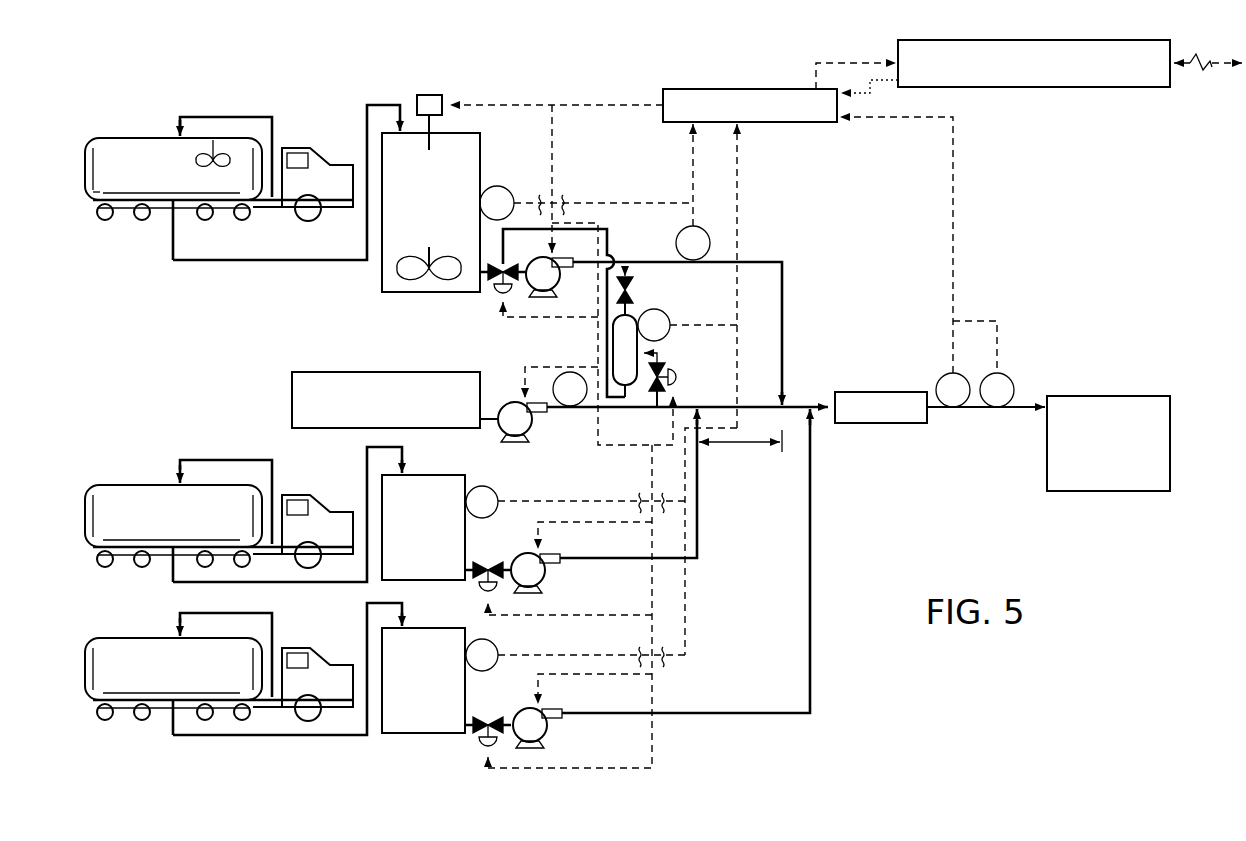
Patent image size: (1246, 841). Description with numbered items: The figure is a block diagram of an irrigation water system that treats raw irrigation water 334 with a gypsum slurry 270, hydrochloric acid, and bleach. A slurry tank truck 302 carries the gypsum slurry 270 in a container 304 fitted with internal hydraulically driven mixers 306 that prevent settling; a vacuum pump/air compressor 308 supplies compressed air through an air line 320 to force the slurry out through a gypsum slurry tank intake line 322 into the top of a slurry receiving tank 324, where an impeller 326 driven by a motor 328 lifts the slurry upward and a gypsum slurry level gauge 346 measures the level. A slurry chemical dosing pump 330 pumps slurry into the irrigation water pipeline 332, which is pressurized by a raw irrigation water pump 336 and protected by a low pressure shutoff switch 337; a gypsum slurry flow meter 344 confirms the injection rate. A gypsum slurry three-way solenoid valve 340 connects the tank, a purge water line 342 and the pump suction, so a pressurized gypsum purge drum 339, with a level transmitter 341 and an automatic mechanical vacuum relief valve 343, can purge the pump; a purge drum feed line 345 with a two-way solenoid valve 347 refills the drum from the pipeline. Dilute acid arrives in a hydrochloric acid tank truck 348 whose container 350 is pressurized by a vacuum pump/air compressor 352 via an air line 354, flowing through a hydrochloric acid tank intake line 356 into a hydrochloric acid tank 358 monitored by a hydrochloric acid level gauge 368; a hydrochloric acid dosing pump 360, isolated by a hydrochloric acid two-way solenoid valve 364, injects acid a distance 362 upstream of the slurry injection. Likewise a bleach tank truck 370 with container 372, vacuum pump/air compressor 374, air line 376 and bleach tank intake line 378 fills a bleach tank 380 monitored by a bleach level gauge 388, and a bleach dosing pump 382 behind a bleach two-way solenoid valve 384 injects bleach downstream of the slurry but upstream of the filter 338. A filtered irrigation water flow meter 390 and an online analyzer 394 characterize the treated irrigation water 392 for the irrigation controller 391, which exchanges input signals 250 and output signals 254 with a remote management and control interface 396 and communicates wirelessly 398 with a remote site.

The input signals 250 is at (640, 203).
The output signals 254 is at (604, 105).
The gypsum slurry 270 is at (98, 185).
The slurry tank truck 302 is at (160, 122).
The container 304 is at (105, 138).
The internal hydraulically driven mixers 306 is at (215, 158).
The vacuum pump/air compressor 308 is at (267, 208).
The air line 320 is at (243, 115).
The gypsum slurry tank intake line 322 is at (333, 261).
The slurry receiving tank 324 is at (428, 293).
The impeller 326 is at (407, 283).
The motor 328 is at (430, 95).
The slurry chemical dosing pump 330 is at (542, 294).
The irrigation water pipeline 332 is at (757, 406).
The raw irrigation water 334 is at (290, 396).
The raw irrigation water pump 336 is at (518, 443).
The low pressure shutoff switch 337 is at (553, 383).
The filter 338 is at (852, 391).
The pressurized gypsum purge drum 339 is at (615, 350).
The gypsum slurry three-way solenoid valve 340 is at (495, 286).
The level transmitter 341 is at (670, 320).
The purge water line 342 is at (610, 230).
The automatic mechanical vacuum relief valve 343 is at (636, 292).
The gypsum slurry flow meter 344 is at (700, 229).
The purge drum feed line 345 is at (655, 402).
The gypsum slurry level gauge 346 is at (506, 187).
The two-way solenoid valve 347 is at (667, 368).
The hydrochloric acid tank truck 348 is at (162, 470).
The container 350 is at (108, 485).
The vacuum pump/air compressor 352 is at (265, 560).
The air line 354 is at (248, 460).
The hydrochloric acid tank intake line 356 is at (275, 585).
The hydrochloric acid tank 358 is at (408, 582).
The hydrochloric acid dosing pump 360 is at (540, 590).
The distance 362 is at (745, 445).
The hydrochloric acid two-way solenoid valve 364 is at (496, 562).
The hydrochloric acid level gauge 368 is at (498, 494).
The bleach tank truck 370 is at (158, 630).
The container 372 is at (108, 638).
The vacuum pump/air compressor 374 is at (265, 712).
The air line 376 is at (225, 613).
The bleach tank intake line 378 is at (237, 736).
The bleach tank 380 is at (420, 735).
The bleach dosing pump 382 is at (542, 742).
The bleach two-way solenoid valve 384 is at (496, 716).
The bleach level gauge 388 is at (495, 640).
The filtered irrigation water flow meter 390 is at (943, 377).
The irrigation controller 391 is at (662, 115).
The treated irrigation water 392 is at (1110, 396).
The online analyzer 394 is at (1007, 378).
The remote management and control interface 396 is at (1033, 88).
The wireless communication 398 is at (1200, 72).